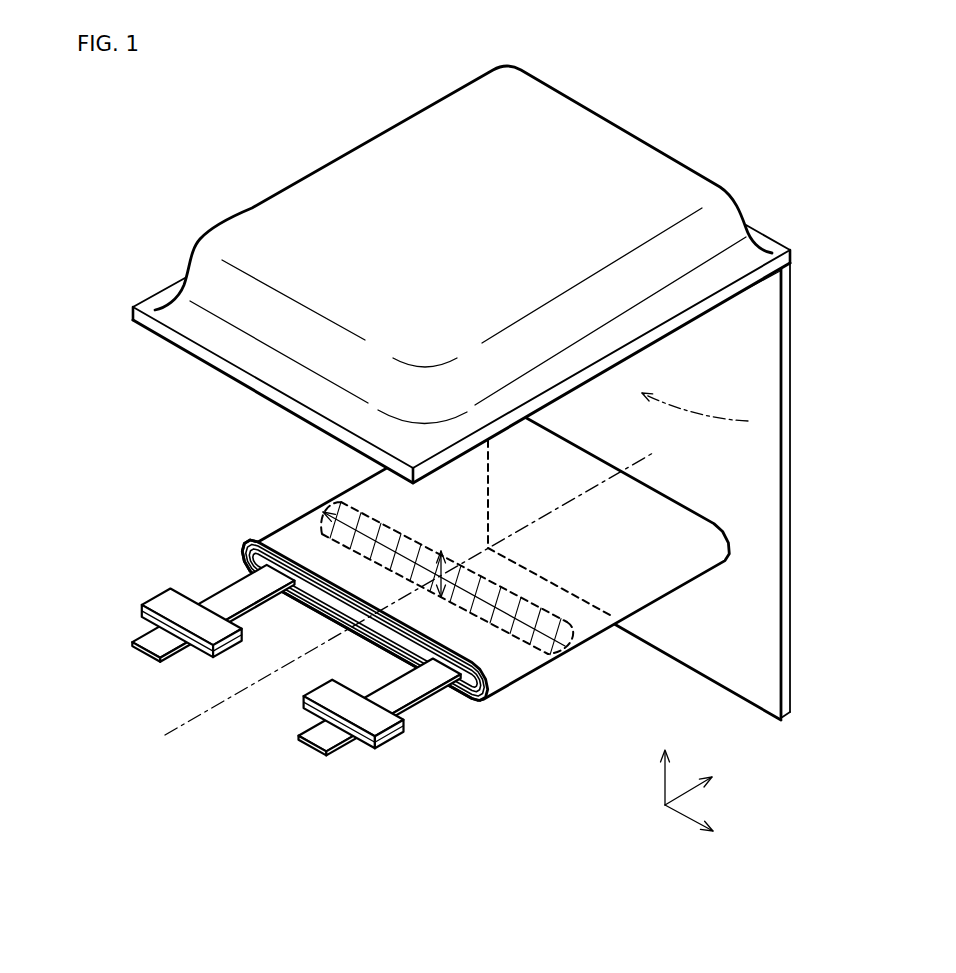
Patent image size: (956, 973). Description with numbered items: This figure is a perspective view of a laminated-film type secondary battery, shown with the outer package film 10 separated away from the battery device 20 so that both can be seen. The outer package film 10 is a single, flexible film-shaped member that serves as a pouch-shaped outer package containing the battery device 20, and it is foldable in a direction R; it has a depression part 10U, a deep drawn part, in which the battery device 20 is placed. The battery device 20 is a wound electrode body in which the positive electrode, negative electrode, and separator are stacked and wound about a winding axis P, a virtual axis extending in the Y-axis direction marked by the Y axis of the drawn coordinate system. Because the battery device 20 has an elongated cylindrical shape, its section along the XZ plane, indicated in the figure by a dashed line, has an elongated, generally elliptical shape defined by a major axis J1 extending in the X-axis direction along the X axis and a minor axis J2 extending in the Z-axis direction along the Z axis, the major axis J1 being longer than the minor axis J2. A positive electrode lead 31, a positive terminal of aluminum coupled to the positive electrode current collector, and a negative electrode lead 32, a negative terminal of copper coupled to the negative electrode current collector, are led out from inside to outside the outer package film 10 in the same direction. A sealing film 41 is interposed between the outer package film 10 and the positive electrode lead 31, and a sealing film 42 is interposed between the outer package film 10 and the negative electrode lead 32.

The outer package film 10 is at (461, 274).
The depression part 10U is at (357, 178).
The battery device 20 is at (547, 700).
The positive electrode lead 31 is at (153, 648).
The negative electrode lead 32 is at (313, 744).
The sealing film 41 is at (167, 608).
The sealing film 42 is at (397, 743).
The major axis J1 is at (567, 645).
The minor axis J2 is at (455, 562).
The winding axis P is at (206, 722).
The direction R is at (692, 411).
The X-axis direction X is at (700, 825).
The Y-axis direction Y is at (700, 783).
The Z-axis direction Z is at (663, 762).